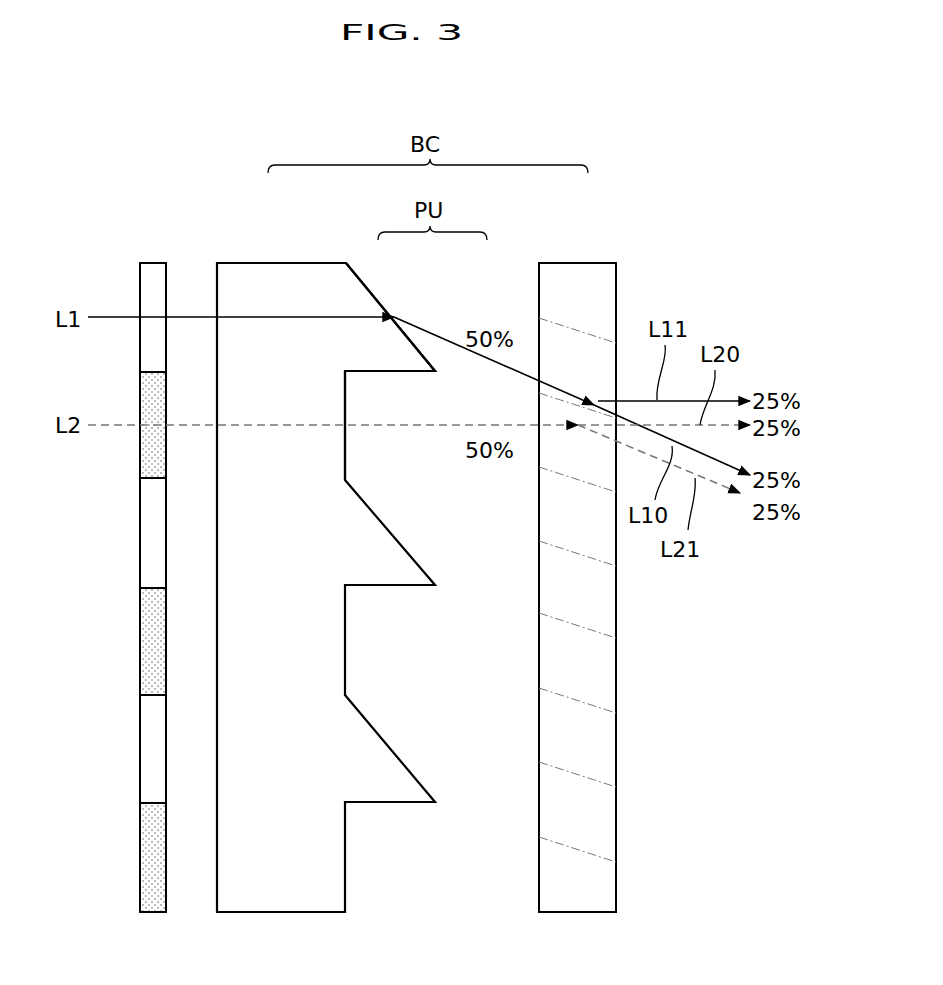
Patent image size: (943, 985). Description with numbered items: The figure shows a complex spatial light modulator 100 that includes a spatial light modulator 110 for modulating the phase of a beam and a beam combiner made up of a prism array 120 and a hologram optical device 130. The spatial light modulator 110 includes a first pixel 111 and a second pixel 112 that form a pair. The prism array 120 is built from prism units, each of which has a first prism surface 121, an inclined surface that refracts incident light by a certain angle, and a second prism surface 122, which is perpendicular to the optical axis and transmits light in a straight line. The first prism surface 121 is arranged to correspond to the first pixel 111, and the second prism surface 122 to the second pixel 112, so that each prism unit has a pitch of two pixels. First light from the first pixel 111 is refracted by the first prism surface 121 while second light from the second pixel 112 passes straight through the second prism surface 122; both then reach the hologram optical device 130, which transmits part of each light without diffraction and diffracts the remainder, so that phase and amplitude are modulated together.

The complex spatial light modulator 100 is at (705, 211).
The spatial light modulator 110 is at (118, 546).
The first pixel 111 is at (144, 286).
The second pixel 112 is at (144, 395).
The prism array 120 is at (353, 546).
The first prism surface 121 is at (371, 292).
The second prism surface 122 is at (346, 404).
The hologram optical device 130 is at (578, 263).